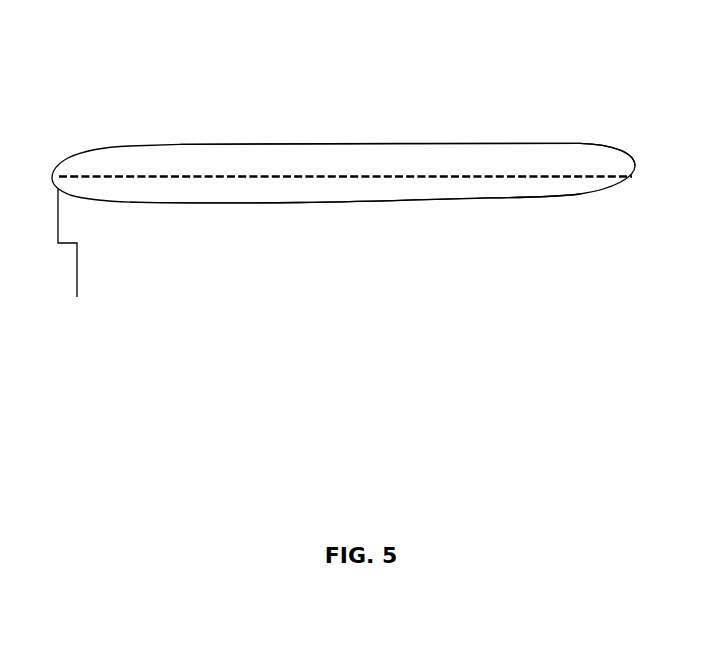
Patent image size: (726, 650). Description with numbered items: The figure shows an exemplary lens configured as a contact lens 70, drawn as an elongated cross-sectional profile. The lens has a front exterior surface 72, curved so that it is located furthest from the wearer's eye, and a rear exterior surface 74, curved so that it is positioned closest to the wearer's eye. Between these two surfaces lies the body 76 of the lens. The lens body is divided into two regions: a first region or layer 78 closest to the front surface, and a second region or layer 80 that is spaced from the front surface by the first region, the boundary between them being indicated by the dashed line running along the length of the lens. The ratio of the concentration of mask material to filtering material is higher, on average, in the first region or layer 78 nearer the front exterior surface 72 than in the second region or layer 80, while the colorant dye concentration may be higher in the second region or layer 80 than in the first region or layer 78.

The contact lens 70 is at (170, 132).
The front exterior surface 72 is at (330, 144).
The rear exterior surface 74 is at (402, 202).
The body 76 is at (76, 260).
The first region or layer 78 is at (465, 159).
The second region or layer 80 is at (267, 193).